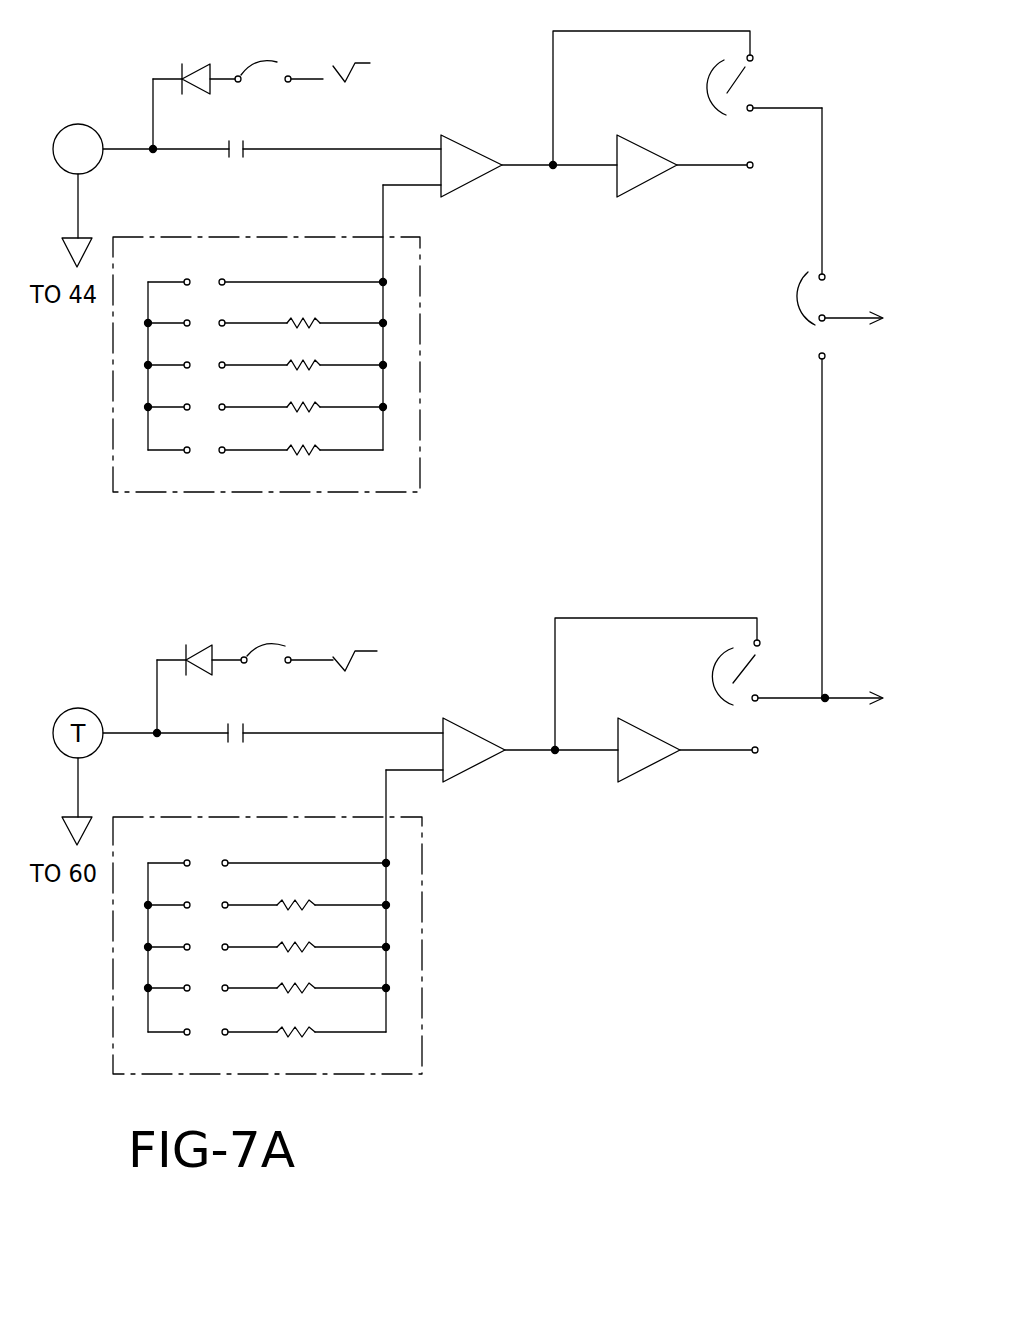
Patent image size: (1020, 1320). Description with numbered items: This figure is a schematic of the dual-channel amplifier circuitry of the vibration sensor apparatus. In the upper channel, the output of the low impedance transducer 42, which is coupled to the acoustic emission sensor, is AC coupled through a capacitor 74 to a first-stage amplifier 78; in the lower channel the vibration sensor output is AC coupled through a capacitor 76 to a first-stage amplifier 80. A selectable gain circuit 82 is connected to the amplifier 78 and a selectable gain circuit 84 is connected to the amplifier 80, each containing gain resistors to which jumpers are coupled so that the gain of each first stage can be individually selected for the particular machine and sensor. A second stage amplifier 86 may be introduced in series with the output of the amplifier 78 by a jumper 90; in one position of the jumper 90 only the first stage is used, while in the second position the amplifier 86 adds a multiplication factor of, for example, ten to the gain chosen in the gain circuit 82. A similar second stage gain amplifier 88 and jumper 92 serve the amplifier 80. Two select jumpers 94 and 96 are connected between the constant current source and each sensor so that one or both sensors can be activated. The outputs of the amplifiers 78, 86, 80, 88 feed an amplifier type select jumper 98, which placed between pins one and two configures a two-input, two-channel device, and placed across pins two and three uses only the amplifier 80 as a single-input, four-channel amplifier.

The low impedance transducer 42 is at (90, 125).
The capacitor 74 is at (247, 147).
The capacitor 76 is at (247, 725).
The amplifier 78 is at (460, 188).
The amplifier 80 is at (463, 768).
The selectable gain circuit 82 is at (414, 390).
The selectable gain circuit 84 is at (415, 1016).
The second stage amplifier 86 is at (627, 185).
The second stage gain amplifier 88 is at (632, 768).
The jumper 90 is at (747, 82).
The jumper 92 is at (748, 680).
The select jumper 94 is at (277, 62).
The select jumper 96 is at (285, 645).
The amplifier type select jumper 98 is at (802, 292).